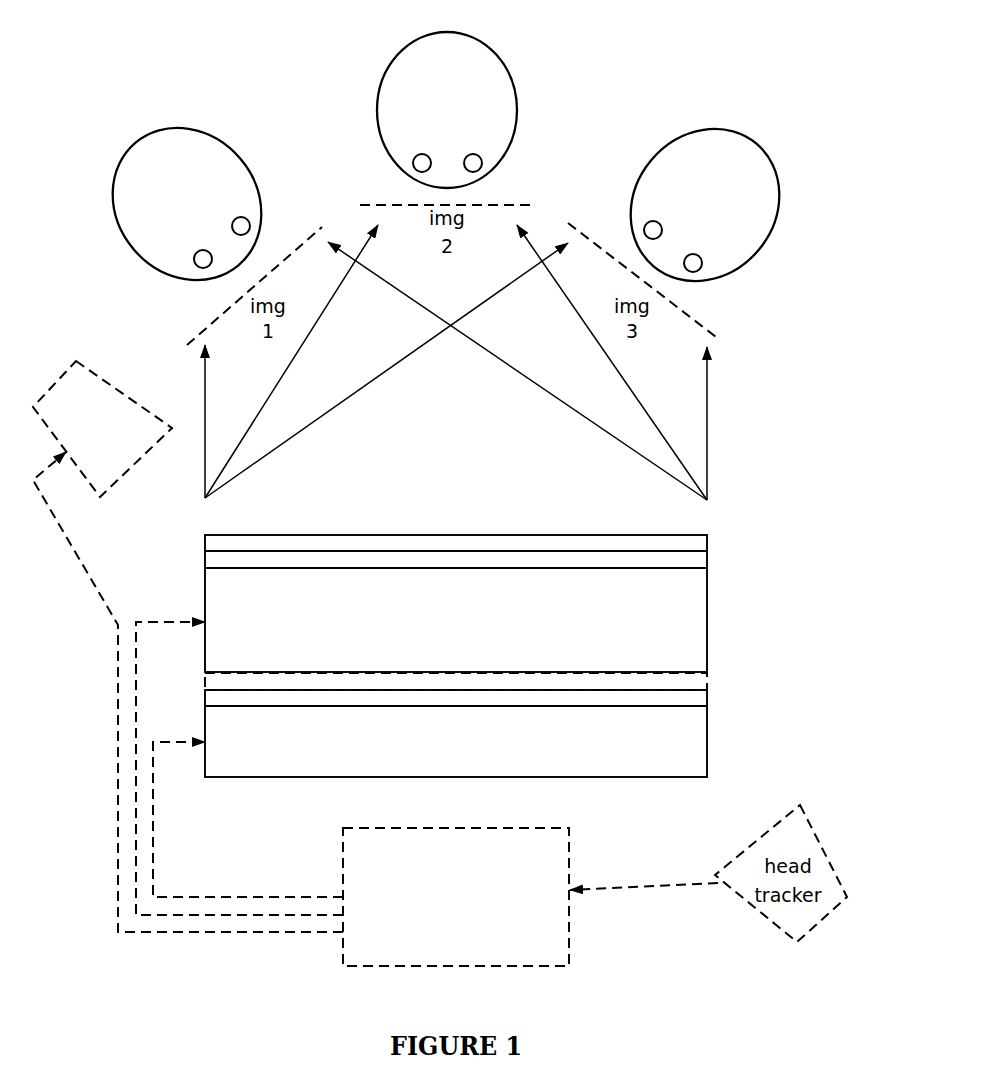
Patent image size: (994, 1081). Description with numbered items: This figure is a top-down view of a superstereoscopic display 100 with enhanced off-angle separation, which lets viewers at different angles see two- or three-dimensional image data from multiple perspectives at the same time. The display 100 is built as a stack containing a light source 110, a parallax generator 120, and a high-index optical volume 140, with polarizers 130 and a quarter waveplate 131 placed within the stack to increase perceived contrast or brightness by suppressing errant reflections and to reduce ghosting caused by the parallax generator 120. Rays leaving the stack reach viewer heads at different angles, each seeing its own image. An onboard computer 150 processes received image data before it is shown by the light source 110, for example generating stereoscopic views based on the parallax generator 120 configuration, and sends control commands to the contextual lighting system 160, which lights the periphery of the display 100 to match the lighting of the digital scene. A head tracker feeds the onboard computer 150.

The superstereoscopic display 100 is at (510, 558).
The light source 110 is at (456, 741).
The parallax generator 120 is at (480, 708).
The polarizers 130 is at (480, 612).
The quarter waveplates 131 is at (480, 576).
The high-index optical volume 140 is at (456, 620).
The onboard computer 150 is at (375, 709).
The contextual lighting system 160 is at (102, 429).